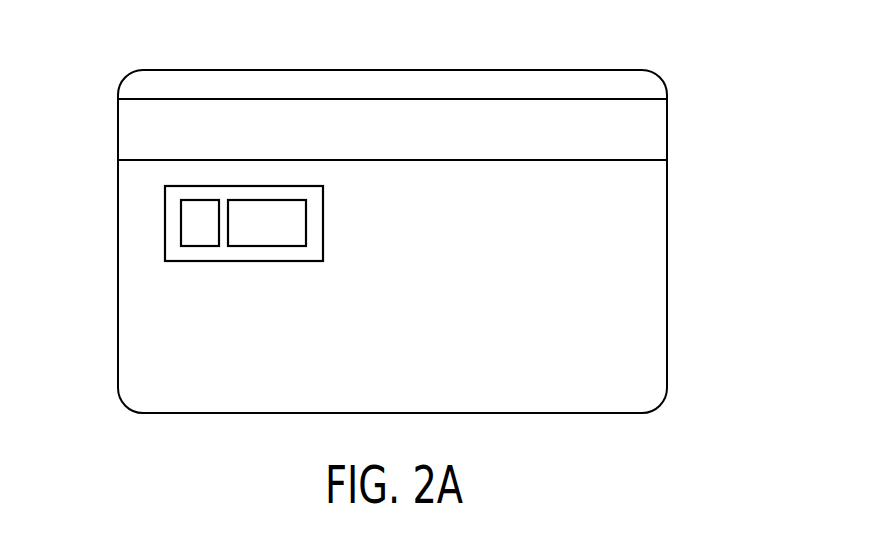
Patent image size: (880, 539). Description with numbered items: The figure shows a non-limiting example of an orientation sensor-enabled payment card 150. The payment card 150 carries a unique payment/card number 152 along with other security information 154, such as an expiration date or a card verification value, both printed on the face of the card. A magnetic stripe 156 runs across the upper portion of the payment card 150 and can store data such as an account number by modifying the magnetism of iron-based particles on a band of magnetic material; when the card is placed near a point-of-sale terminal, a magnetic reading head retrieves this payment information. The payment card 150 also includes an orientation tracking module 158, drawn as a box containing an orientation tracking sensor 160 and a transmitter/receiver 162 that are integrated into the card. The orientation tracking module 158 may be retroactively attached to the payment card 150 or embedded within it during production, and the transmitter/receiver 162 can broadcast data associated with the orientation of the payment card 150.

The payment card 150 is at (667, 241).
The unique payment/card number 152 is at (172, 315).
The security information 154 is at (578, 185).
The magnetic stripe 156 is at (299, 115).
The orientation tracking module 158 is at (165, 220).
The orientation tracking sensor 160 is at (200, 246).
The transmitter/receiver 162 is at (306, 220).